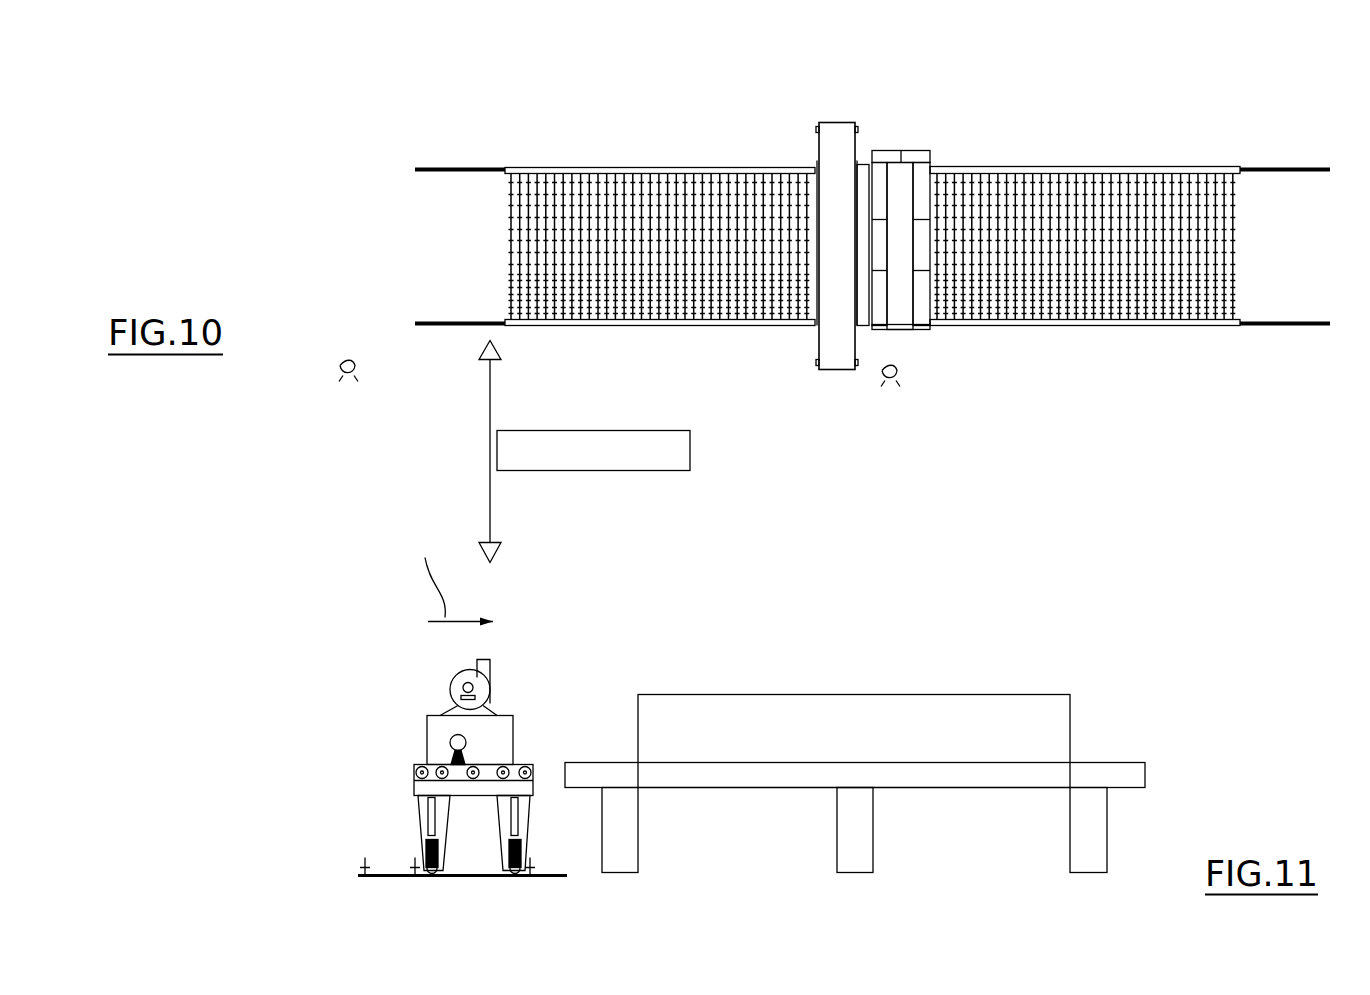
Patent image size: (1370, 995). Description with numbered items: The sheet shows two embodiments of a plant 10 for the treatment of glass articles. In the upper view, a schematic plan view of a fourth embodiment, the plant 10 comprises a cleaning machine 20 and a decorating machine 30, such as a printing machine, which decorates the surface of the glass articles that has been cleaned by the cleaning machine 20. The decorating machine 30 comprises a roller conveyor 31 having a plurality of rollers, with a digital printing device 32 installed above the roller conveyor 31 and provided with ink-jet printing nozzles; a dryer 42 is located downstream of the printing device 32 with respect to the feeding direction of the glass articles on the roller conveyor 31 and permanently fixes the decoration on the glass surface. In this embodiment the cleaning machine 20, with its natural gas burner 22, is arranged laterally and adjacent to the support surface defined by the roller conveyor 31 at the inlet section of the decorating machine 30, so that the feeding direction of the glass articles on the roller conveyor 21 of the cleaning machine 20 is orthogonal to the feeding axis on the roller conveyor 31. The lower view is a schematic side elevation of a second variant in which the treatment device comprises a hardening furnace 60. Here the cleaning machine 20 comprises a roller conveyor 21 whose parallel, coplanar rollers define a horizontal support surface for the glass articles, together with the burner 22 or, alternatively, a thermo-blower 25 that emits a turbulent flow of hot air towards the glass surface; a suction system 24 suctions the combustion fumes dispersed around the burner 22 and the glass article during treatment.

In FIG. 10, the plant 10 is at (378, 237).
In FIG. 11, the plant 10 is at (320, 678).
In FIG. 10, the cleaning machine 20 is at (672, 480).
In FIG. 11, the cleaning machine 20 is at (513, 720).
In FIG. 11, the roller conveyor 21 is at (415, 788).
In FIG. 11, the natural gas burner 22 is at (409, 698).
In FIG. 11, the suction system 24 is at (493, 662).
In FIG. 11, the thermo-blower 25 is at (450, 742).
In FIG. 10, the decorating machine 30 is at (965, 125).
In FIG. 10, the roller conveyor 31 is at (475, 313).
In FIG. 10, the printing device 32 is at (833, 145).
In FIG. 10, the dryer 42 is at (917, 333).
In FIG. 11, the hardening furnace 60 is at (913, 683).